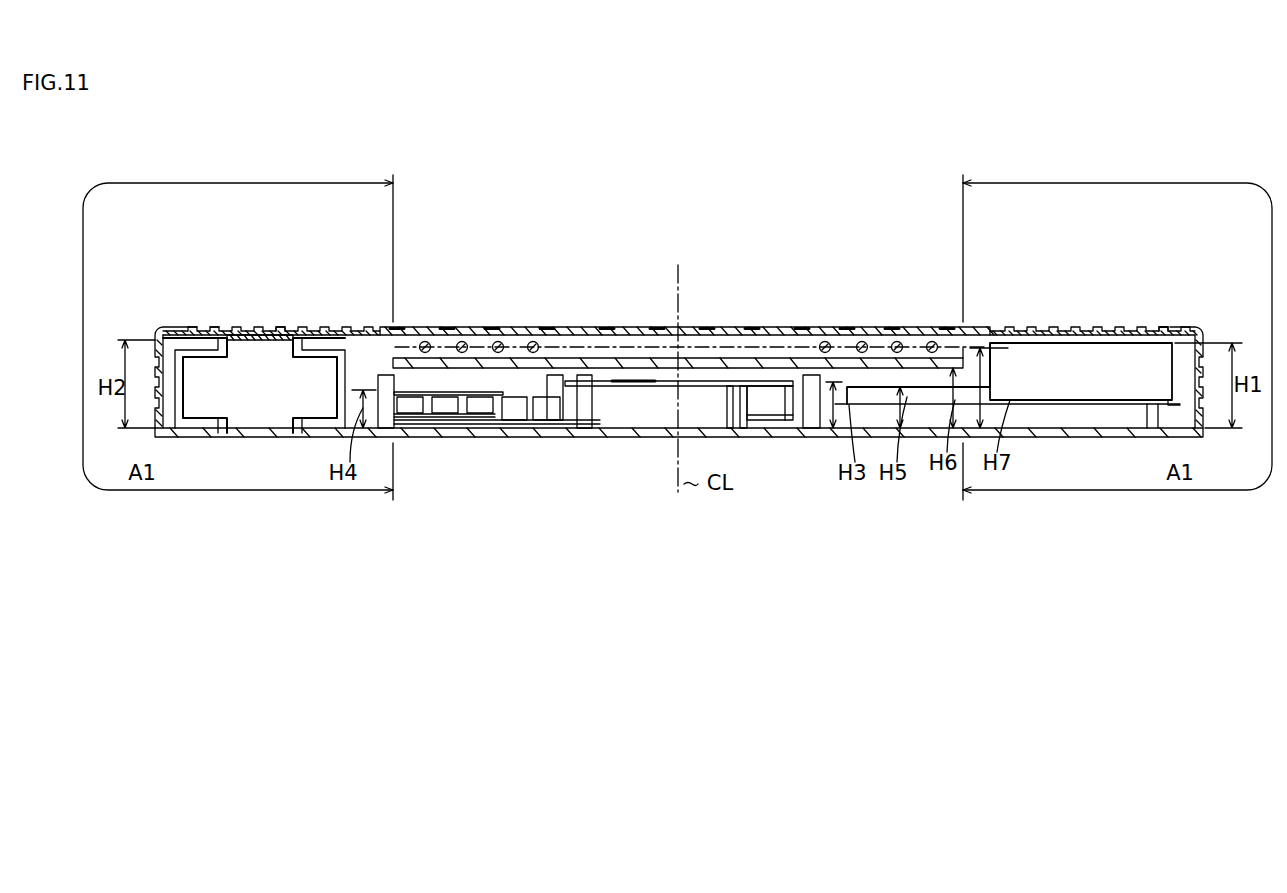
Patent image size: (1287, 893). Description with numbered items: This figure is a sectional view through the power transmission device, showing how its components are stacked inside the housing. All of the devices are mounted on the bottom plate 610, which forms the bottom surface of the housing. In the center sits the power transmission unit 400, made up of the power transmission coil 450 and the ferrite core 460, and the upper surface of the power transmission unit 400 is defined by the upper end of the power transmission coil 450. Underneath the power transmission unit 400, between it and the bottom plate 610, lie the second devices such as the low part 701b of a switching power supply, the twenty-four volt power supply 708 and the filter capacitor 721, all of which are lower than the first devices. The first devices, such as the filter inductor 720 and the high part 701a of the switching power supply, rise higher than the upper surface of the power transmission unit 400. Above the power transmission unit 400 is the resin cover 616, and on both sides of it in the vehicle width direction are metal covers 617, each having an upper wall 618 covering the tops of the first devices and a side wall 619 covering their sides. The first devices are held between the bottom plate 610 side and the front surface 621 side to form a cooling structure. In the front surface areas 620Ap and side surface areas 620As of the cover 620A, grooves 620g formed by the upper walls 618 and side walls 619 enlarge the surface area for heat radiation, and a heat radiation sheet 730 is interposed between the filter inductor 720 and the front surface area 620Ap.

The power transmission unit 400 is at (689, 305).
The power transmission coil 450 is at (535, 342).
The ferrite core 460 is at (512, 275).
The bottom plate 610 is at (447, 428).
The resin cover 616 is at (445, 327).
The metal cover 617 is at (213, 327).
The upper wall 618 is at (1166, 327).
The side wall 619 is at (1204, 372).
The cover 620A is at (700, 368).
The front surface area 620Ap is at (338, 327).
The side surface area 620As is at (160, 383).
The groove 620g is at (278, 330).
The front surface 621 is at (192, 327).
The high part of switching power supply 701a is at (1078, 385).
The low part of switching power supply 701b is at (937, 397).
The 24V power supply 708 is at (637, 403).
The filter inductor 720 is at (262, 400).
The filter capacitor 721 is at (478, 405).
The heat radiation sheet 730 is at (238, 334).